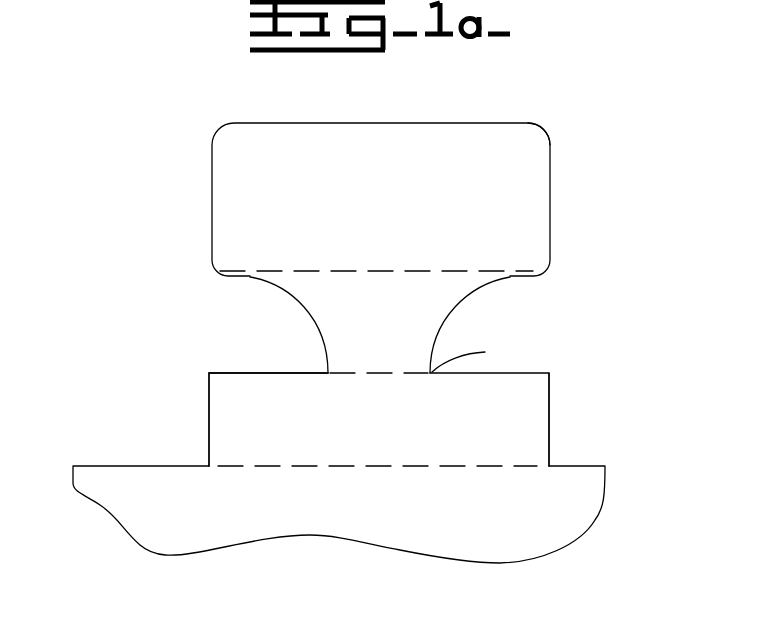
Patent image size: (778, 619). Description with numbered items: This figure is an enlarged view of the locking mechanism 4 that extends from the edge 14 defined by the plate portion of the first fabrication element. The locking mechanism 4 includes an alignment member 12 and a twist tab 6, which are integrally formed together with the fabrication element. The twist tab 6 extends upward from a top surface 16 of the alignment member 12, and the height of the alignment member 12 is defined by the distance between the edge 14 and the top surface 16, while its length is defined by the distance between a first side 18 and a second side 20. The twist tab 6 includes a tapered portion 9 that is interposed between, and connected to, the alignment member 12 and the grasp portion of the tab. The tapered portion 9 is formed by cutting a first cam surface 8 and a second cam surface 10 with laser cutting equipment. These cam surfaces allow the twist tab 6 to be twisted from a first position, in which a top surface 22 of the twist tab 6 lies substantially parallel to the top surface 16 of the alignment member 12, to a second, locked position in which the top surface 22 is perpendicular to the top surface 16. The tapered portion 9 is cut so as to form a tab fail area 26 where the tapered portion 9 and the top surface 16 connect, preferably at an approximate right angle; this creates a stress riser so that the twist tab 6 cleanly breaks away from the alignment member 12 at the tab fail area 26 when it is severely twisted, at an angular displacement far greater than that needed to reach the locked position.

The locking mechanism 4 is at (153, 122).
The twist tab 6 is at (595, 165).
The first cam surface 8 is at (253, 279).
The tapered portion 9 is at (487, 318).
The second cam surface 10 is at (510, 281).
The alignment member 12 is at (535, 399).
The edge 14 is at (118, 464).
The top surface 16 is at (227, 372).
The first side 18 is at (208, 418).
The second side 20 is at (550, 434).
The top surface 22 is at (298, 122).
The tab fail area 26 is at (433, 371).